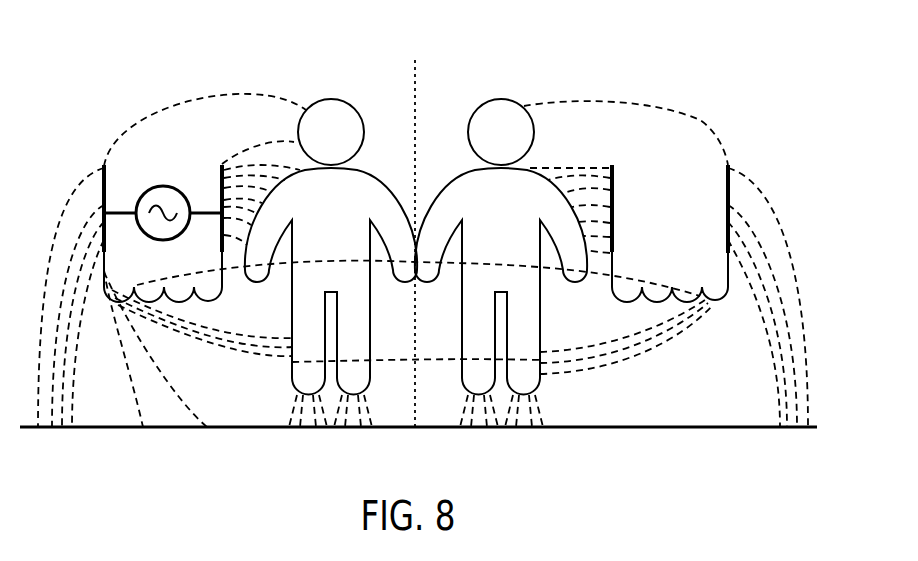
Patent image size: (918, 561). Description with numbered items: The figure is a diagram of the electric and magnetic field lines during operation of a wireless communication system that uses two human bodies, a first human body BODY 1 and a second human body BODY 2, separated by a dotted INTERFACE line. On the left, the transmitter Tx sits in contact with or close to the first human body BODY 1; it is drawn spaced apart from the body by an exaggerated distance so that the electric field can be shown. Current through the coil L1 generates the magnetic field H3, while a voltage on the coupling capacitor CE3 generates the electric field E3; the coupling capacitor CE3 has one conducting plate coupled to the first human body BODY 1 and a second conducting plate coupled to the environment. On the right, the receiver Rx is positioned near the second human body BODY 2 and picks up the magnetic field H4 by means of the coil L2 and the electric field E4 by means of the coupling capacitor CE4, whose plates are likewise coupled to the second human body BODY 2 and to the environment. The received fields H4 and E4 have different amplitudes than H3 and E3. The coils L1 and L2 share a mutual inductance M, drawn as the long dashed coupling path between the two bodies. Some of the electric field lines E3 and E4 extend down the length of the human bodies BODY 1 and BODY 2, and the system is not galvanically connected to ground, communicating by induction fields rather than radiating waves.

The interface between body 1 and body 2 INTERFACE is at (418, 229).
The first human body BODY 1 is at (331, 232).
The second human body BODY 2 is at (501, 232).
The electric field E3 is at (172, 260).
The coupling capacitor CE3 is at (221, 206).
The transmitter signal source Tx is at (163, 200).
The coil L1 is at (198, 307).
The mutual inductance M is at (418, 311).
The magnetic field H3 is at (299, 410).
The magnetic field H4 is at (527, 410).
The coupling capacitor CE4 is at (610, 210).
The receiver Rx is at (670, 230).
The electric field E4 is at (666, 264).
The coil L2 is at (700, 305).